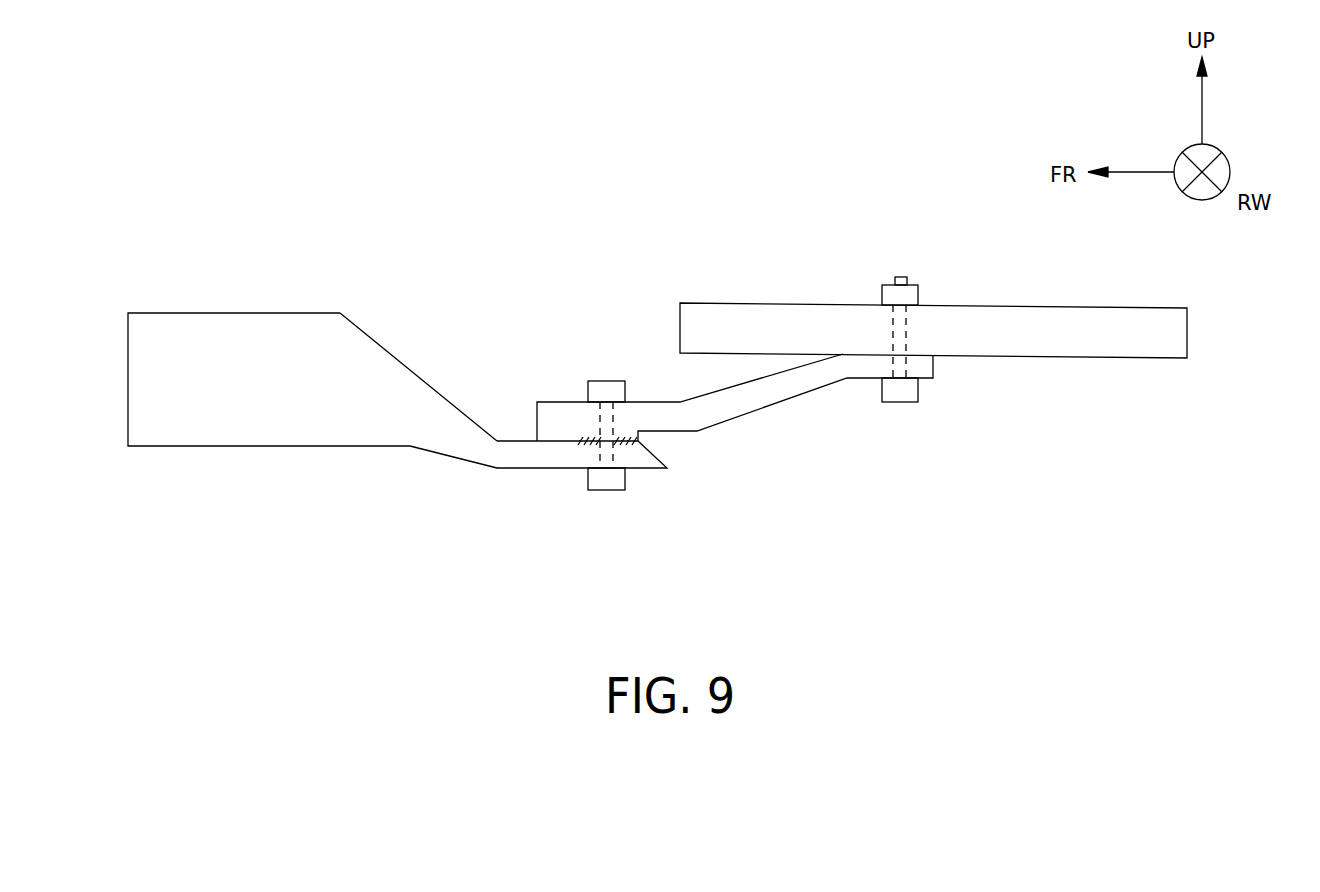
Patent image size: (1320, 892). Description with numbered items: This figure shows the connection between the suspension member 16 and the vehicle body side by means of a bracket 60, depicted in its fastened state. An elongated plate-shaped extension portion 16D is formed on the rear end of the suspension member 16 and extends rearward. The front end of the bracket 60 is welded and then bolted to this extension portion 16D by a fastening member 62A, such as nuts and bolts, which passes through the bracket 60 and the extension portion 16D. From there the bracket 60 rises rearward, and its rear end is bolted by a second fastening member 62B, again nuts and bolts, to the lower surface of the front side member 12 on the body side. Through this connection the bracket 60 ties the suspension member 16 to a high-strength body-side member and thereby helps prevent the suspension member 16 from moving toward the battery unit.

The front side member 12 is at (1103, 358).
The suspension member 16 is at (247, 447).
The extension portion 16D is at (539, 468).
The bracket 60 is at (783, 402).
The fastening member 62A is at (623, 492).
The fastening member 62B is at (922, 402).